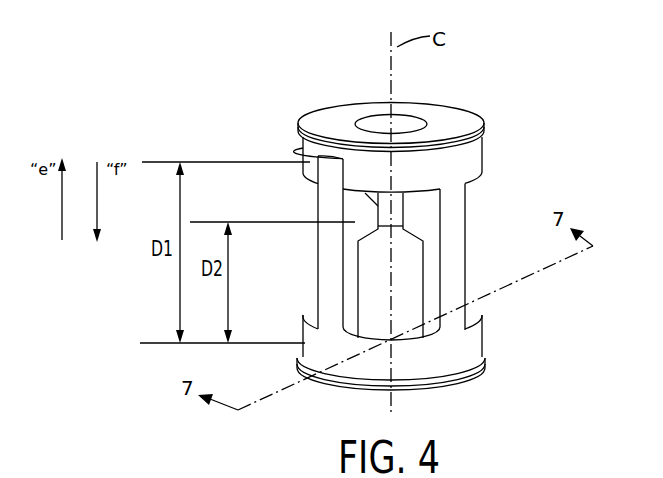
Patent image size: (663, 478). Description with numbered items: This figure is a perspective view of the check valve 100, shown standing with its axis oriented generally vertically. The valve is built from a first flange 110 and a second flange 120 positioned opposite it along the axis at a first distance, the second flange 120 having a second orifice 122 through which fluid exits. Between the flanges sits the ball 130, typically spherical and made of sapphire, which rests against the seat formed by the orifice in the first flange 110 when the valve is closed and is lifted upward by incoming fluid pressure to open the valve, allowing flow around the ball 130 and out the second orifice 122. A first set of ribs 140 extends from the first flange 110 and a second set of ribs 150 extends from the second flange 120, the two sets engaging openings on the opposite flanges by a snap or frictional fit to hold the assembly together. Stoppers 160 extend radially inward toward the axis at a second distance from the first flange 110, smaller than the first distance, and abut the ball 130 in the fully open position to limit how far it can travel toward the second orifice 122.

The check valve 100 is at (565, 89).
The first flange 110 is at (469, 330).
The second flange 120 is at (474, 160).
The second orifice 122 is at (409, 118).
The ball 130 is at (416, 275).
The first set of ribs 140 is at (328, 283).
The second set of ribs 150 is at (462, 227).
The stoppers 160 is at (362, 212).